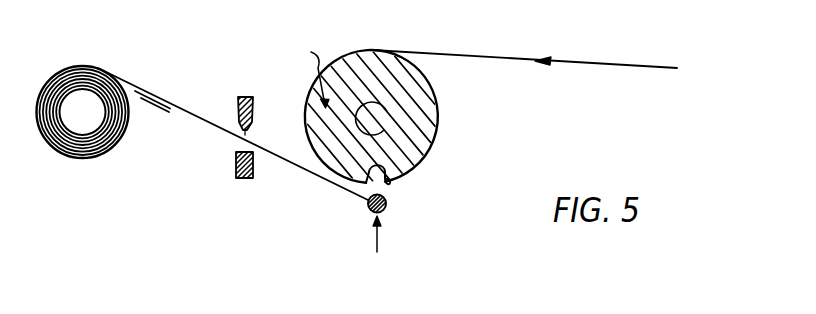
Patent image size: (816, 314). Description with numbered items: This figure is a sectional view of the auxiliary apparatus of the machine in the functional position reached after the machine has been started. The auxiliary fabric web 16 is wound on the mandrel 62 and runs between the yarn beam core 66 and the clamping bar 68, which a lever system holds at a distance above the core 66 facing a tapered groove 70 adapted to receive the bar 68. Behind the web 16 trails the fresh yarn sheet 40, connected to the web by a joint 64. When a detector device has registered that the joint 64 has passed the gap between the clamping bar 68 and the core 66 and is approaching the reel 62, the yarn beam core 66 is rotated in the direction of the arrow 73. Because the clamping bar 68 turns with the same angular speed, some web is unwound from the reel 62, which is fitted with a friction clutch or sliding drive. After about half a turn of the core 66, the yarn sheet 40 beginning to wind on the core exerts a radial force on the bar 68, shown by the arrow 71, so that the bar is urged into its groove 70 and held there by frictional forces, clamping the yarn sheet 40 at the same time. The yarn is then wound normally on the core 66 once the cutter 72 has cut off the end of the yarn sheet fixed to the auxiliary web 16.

The auxiliary fabric web 16 is at (94, 64).
The mandrel 62 is at (77, 132).
The yarn sheet 40 is at (598, 43).
The joint 64 is at (161, 94).
The cutter 72 is at (236, 104).
The yarn beam core 66 is at (438, 111).
The arrow 73 is at (309, 75).
The tapered groove 70 is at (391, 183).
The clamping bar 68 is at (386, 207).
The arrow 71 is at (376, 250).